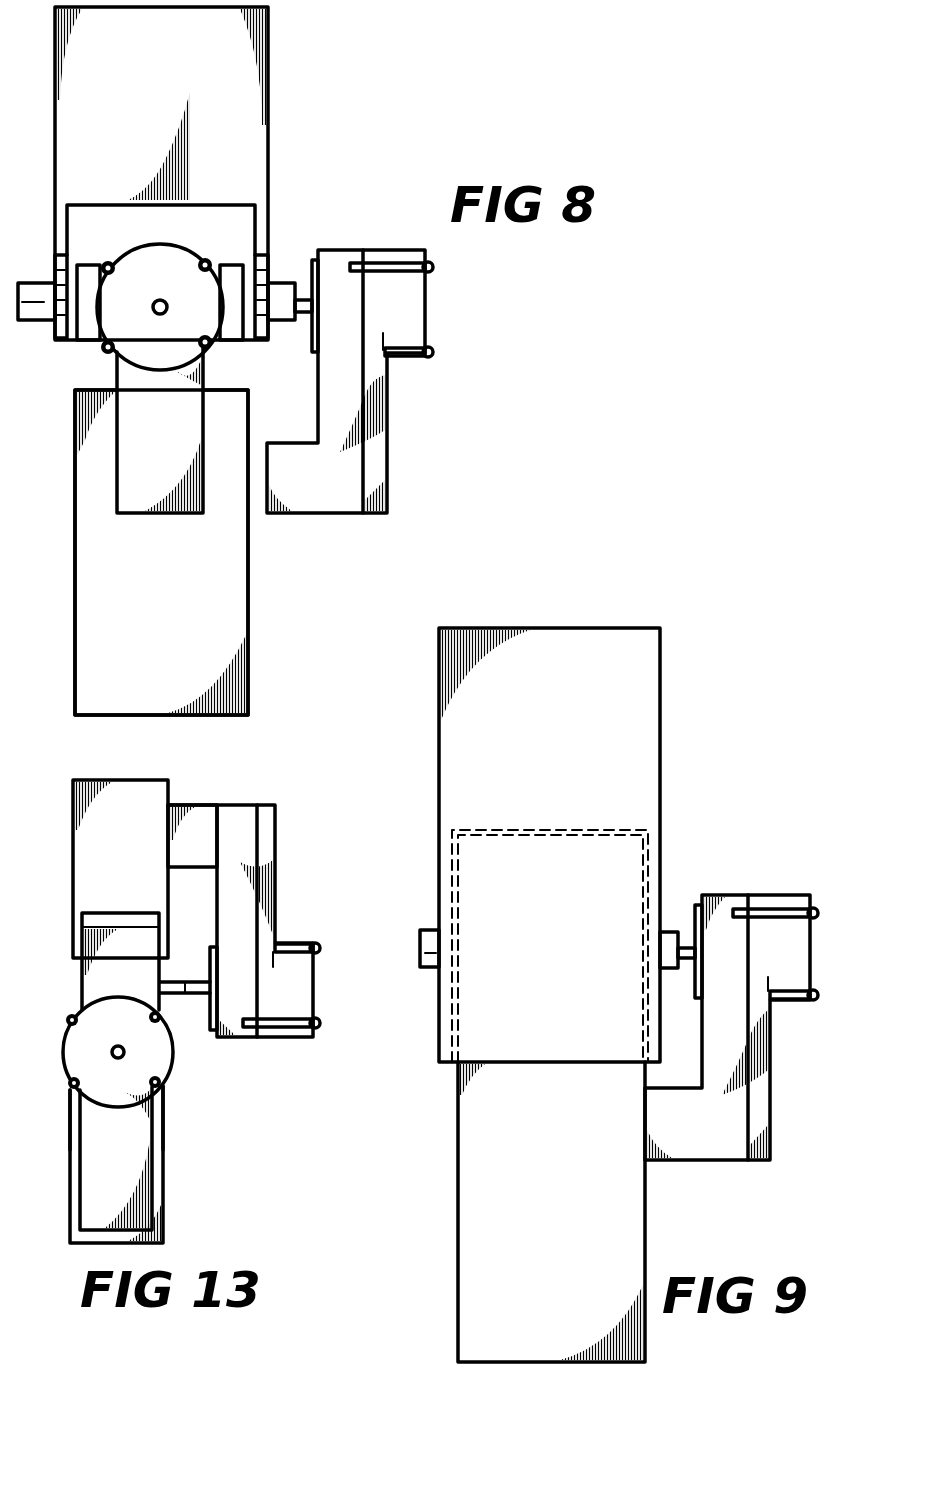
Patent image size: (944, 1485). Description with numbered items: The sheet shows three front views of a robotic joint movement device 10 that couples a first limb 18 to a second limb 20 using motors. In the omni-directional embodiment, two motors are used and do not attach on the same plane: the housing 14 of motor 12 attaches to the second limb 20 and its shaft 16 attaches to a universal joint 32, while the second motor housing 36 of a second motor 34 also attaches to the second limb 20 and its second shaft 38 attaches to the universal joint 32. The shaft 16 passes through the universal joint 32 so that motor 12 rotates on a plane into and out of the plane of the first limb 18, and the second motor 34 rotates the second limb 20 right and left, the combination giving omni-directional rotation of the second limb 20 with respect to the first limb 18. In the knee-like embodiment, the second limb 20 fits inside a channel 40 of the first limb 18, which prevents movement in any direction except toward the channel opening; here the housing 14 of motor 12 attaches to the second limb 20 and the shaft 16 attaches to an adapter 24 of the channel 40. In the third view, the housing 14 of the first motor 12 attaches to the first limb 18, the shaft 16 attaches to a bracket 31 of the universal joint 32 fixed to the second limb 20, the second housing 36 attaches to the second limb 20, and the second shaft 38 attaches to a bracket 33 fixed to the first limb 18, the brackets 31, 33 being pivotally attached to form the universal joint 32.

In FIG. 8, the robotic joint movement device 10 is at (403, 184).
In FIG. 9, the robotic joint movement device 10 is at (788, 827).
In FIG. 8, the motor 12 is at (388, 456).
In FIG. 9, the motor 12 is at (772, 1100).
In FIG. 13, the motor 12 is at (258, 877).
In FIG. 8, the housing 14 is at (383, 380).
In FIG. 9, the housing 14 is at (768, 1025).
In FIG. 13, the housing 14 is at (278, 835).
In FIG. 8, the shaft 16 is at (300, 300).
In FIG. 9, the shaft 16 is at (685, 945).
In FIG. 13, the shaft 16 is at (185, 987).
In FIG. 8, the first limb 18 is at (237, 70).
In FIG. 9, the first limb 18 is at (660, 760).
In FIG. 13, the first limb 18 is at (80, 840).
In FIG. 8, the second limb 20 is at (212, 540).
In FIG. 9, the second limb 20 is at (620, 1197).
In FIG. 13, the second limb 20 is at (165, 1190).
In FIG. 9, the adapter 24 is at (662, 915).
In FIG. 13, the bracket 31 is at (160, 1010).
In FIG. 8, the universal joint 32 is at (232, 272).
In FIG. 13, the bracket 33 is at (97, 968).
In FIG. 8, the second motor 34 is at (172, 518).
In FIG. 13, the second motor 34 is at (92, 1135).
In FIG. 8, the second motor housing 36 is at (128, 468).
In FIG. 13, the second motor housing 36 is at (160, 1135).
In FIG. 8, the second shaft 38 is at (160, 300).
In FIG. 13, the second shaft 38 is at (112, 1052).
In FIG. 9, the channel 40 is at (439, 888).